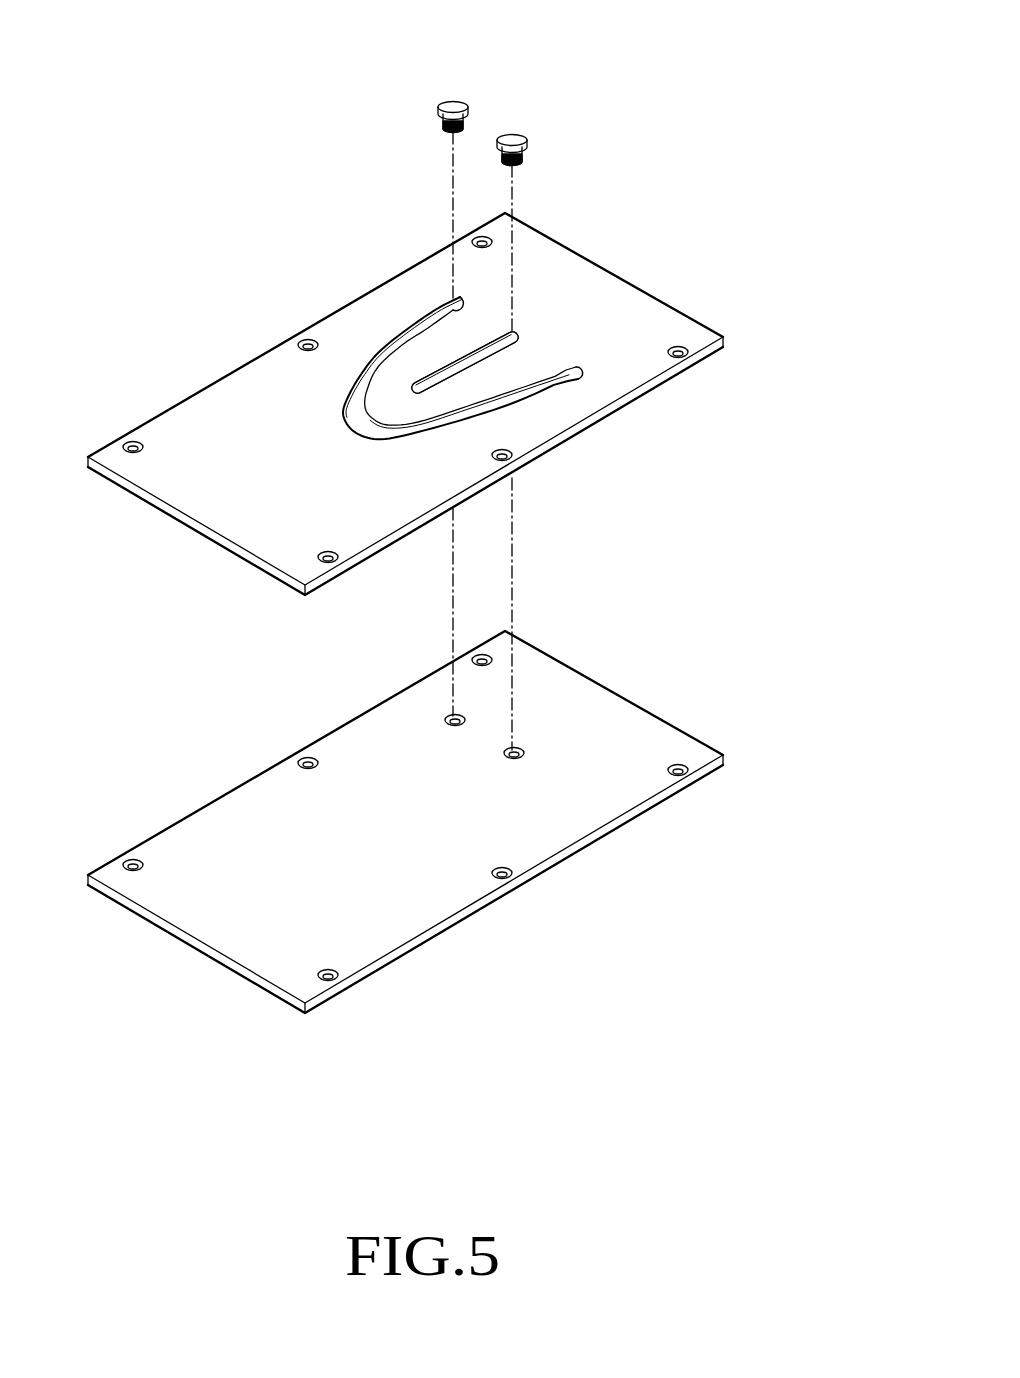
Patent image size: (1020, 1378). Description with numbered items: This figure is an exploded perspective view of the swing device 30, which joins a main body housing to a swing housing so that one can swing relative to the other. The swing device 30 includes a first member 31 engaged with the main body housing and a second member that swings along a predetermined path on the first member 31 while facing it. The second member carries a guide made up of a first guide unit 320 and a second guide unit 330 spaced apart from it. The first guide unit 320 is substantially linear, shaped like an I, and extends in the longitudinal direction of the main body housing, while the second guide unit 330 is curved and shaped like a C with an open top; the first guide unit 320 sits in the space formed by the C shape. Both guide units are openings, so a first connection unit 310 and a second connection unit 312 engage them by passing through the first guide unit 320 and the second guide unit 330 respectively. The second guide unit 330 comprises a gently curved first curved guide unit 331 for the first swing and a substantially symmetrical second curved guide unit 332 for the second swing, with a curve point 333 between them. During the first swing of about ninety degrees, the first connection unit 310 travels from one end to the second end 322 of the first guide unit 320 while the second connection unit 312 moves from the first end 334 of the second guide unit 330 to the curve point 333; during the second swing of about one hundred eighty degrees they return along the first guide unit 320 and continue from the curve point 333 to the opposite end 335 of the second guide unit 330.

The swing device 30 is at (733, 649).
The first member 31 is at (531, 924).
The first connection unit 310 is at (511, 134).
The second connection unit 312 is at (452, 101).
The first guide unit 320 is at (487, 337).
The second end of the first guide unit 322 is at (412, 380).
The second guide unit 330 is at (331, 390).
The first curved guide unit 331 is at (385, 346).
The second curved guide unit 332 is at (522, 393).
The curve point 333 is at (352, 423).
The first end of the second guide unit 334 is at (457, 296).
The first end of the second guide unit 335 is at (583, 368).